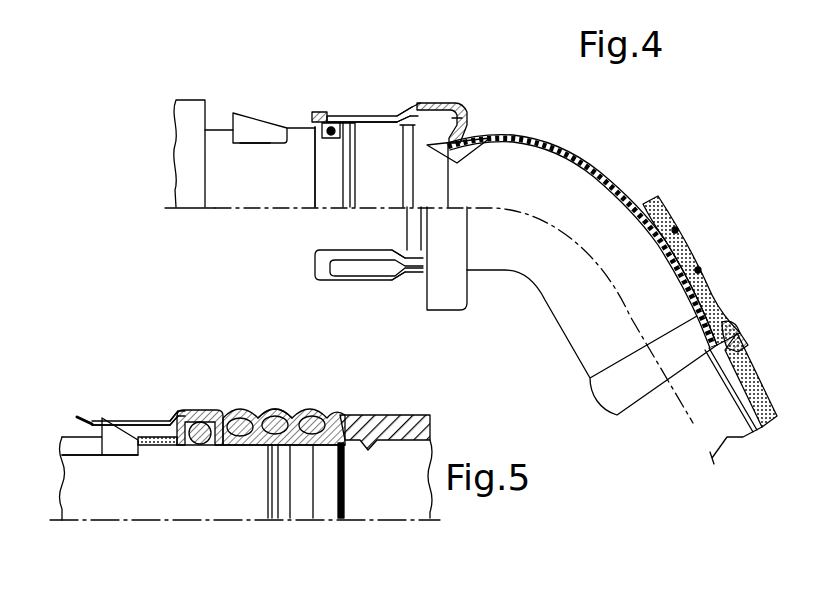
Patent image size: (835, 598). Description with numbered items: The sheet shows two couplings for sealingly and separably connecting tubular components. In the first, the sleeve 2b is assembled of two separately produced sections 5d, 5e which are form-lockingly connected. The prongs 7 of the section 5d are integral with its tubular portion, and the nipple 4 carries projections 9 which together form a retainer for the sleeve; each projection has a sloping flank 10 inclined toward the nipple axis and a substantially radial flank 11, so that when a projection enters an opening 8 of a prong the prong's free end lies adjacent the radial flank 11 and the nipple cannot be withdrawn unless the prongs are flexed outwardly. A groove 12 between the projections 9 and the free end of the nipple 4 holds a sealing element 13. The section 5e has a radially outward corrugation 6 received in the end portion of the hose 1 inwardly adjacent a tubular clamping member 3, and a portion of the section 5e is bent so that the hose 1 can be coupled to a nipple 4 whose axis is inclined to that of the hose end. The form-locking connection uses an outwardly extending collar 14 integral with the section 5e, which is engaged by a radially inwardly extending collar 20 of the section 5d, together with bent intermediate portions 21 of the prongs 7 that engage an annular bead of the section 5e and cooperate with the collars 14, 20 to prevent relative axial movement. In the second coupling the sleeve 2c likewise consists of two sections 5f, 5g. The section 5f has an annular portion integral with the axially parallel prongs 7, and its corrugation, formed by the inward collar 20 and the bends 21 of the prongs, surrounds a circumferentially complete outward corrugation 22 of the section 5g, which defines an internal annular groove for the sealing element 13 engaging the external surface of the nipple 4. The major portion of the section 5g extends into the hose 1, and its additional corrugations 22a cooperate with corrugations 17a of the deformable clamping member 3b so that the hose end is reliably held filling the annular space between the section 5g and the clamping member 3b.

In FIG. 4, the hose 1 is at (760, 372).
In FIG. 5, the hose 1 is at (400, 418).
In FIG. 4, the sleeve 2b is at (466, 99).
In FIG. 5, the sleeve 2c is at (232, 445).
In FIG. 4, the tubular clamping member 3 is at (683, 250).
In FIG. 5, the deformable clamping member 3b is at (296, 411).
In FIG. 4, the nipple 4 is at (187, 100).
In FIG. 5, the nipple 4 is at (60, 436).
In FIG. 4, the section 5d is at (431, 102).
In FIG. 4, the section 5e is at (590, 157).
In FIG. 5, the section 5f is at (213, 411).
In FIG. 5, the section 5g is at (310, 443).
In FIG. 4, the corrugation 6 is at (727, 315).
In FIG. 4, the prongs 7 is at (338, 115).
In FIG. 5, the prongs 7 is at (90, 420).
In FIG. 4, the openings 8 is at (361, 120).
In FIG. 5, the openings 8 is at (143, 422).
In FIG. 4, the projections 9 is at (253, 145).
In FIG. 5, the projections 9 is at (105, 458).
In FIG. 4, the sloping flank 10 is at (256, 130).
In FIG. 5, the sloping flank 10 is at (108, 423).
In FIG. 4, the radially extending flank 11 is at (232, 112).
In FIG. 5, the radially extending flank 11 is at (100, 453).
In FIG. 4, the groove 12 is at (322, 190).
In FIG. 4, the sealing element 13 is at (320, 111).
In FIG. 5, the sealing element 13 is at (190, 448).
In FIG. 4, the collar 14 is at (520, 140).
In FIG. 5, the corrugations 17a is at (430, 422).
In FIG. 4, the collar 20 is at (460, 122).
In FIG. 5, the collar 20 is at (237, 413).
In FIG. 4, the bent intermediate portions 21 is at (405, 108).
In FIG. 5, the bent intermediate portions 21 is at (174, 414).
In FIG. 5, the corrugation 22 is at (163, 443).
In FIG. 5, the additional corrugations 22a is at (265, 413).